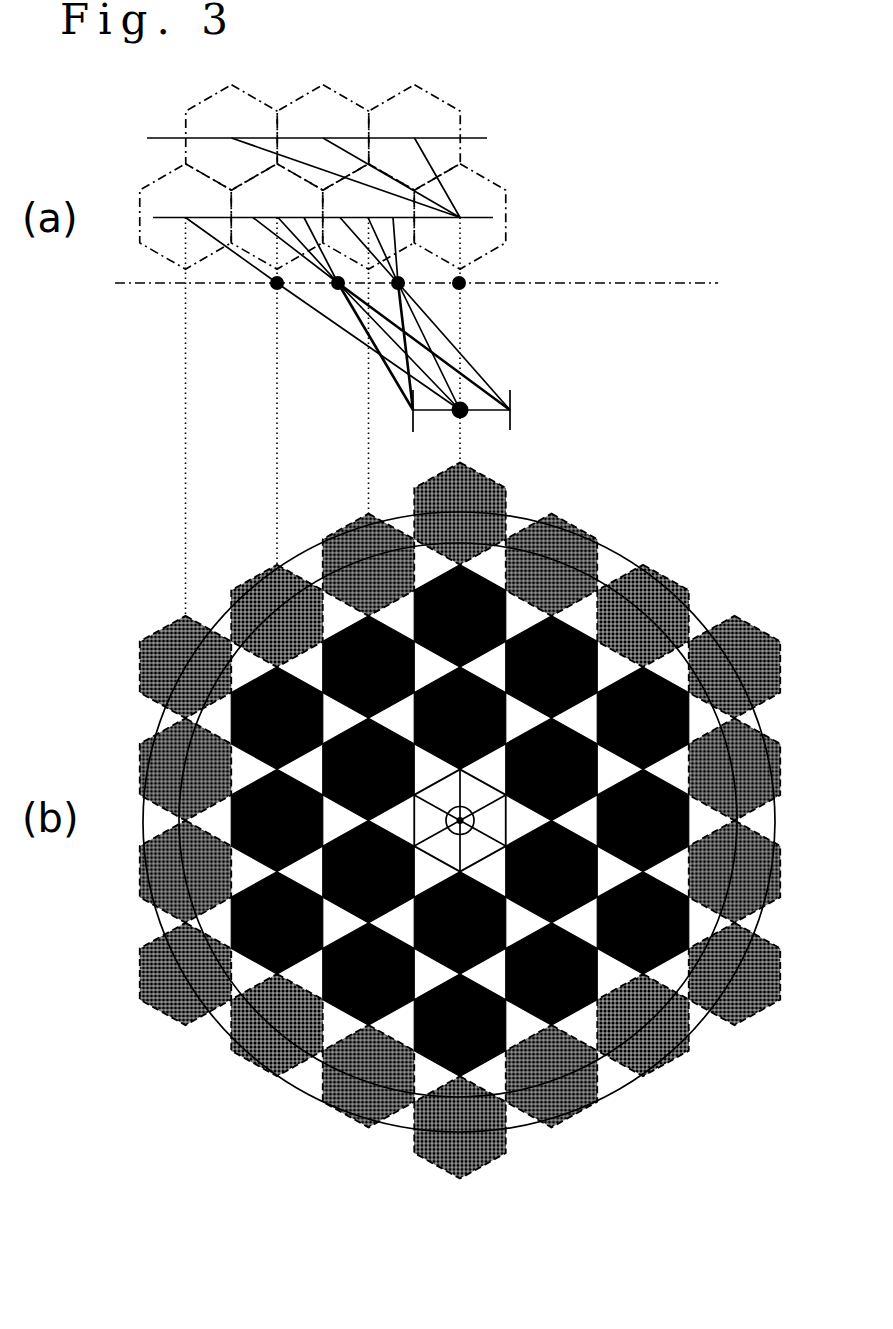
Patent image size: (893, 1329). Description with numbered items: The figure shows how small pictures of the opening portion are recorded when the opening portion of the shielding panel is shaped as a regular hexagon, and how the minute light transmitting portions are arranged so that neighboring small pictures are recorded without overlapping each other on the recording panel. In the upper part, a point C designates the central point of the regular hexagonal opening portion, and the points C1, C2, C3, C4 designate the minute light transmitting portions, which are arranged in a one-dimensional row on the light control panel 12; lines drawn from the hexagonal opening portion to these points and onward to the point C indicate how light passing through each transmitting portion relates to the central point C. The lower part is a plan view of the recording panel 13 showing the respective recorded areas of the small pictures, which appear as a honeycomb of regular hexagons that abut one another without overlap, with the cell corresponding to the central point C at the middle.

The light control panel 12 is at (655, 283).
The recording panel 13 is at (662, 490).
The central point of the opening portion C is at (460, 410).
The minute light transmitting portion C1 is at (277, 283).
The minute light transmitting portion C2 is at (338, 283).
The minute light transmitting portion C3 is at (398, 283).
The minute light transmitting portion C4 is at (459, 283).